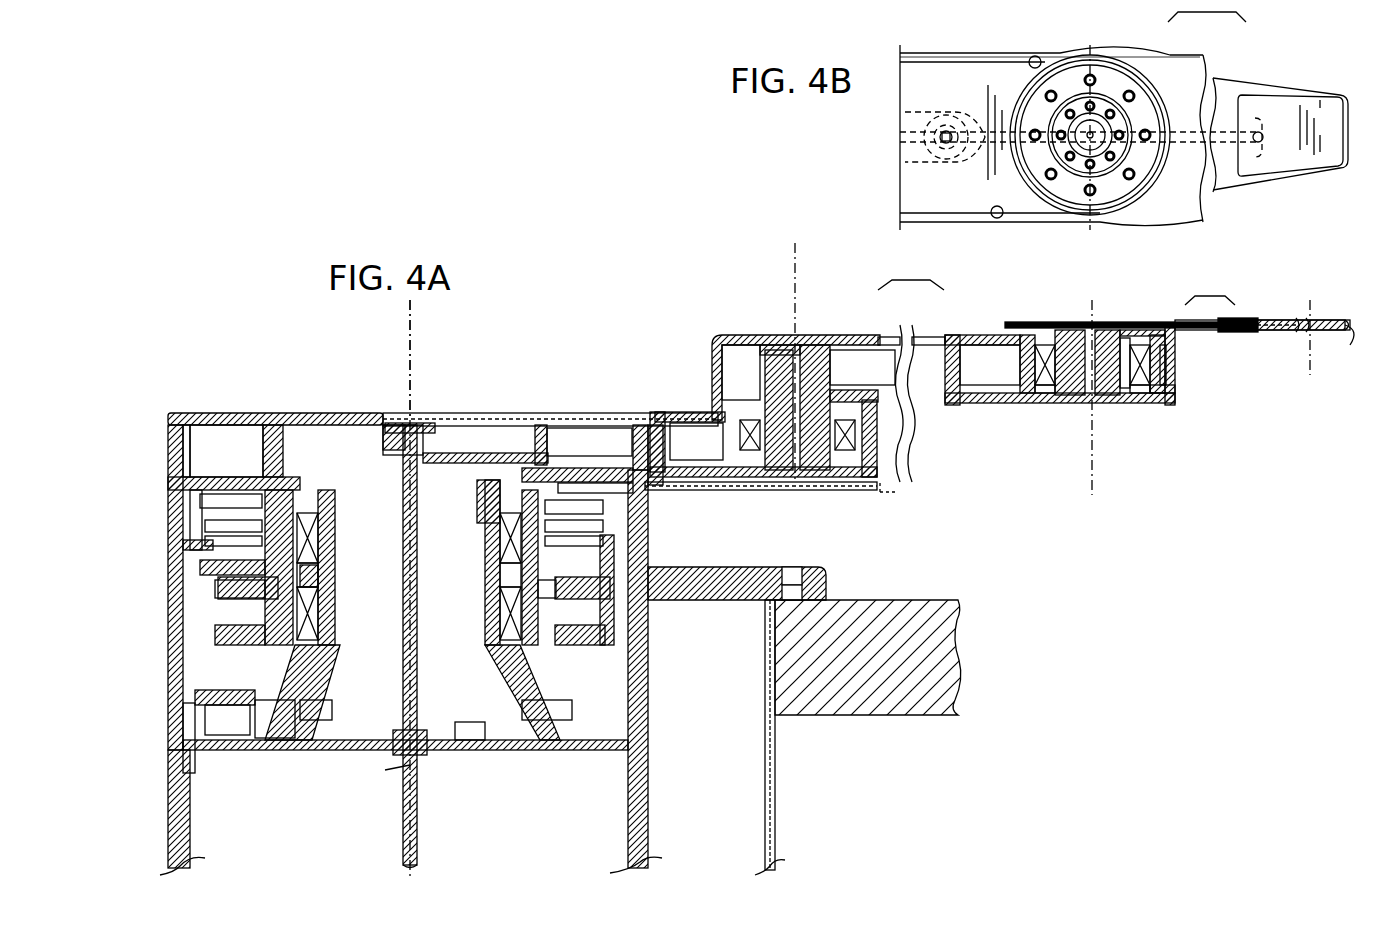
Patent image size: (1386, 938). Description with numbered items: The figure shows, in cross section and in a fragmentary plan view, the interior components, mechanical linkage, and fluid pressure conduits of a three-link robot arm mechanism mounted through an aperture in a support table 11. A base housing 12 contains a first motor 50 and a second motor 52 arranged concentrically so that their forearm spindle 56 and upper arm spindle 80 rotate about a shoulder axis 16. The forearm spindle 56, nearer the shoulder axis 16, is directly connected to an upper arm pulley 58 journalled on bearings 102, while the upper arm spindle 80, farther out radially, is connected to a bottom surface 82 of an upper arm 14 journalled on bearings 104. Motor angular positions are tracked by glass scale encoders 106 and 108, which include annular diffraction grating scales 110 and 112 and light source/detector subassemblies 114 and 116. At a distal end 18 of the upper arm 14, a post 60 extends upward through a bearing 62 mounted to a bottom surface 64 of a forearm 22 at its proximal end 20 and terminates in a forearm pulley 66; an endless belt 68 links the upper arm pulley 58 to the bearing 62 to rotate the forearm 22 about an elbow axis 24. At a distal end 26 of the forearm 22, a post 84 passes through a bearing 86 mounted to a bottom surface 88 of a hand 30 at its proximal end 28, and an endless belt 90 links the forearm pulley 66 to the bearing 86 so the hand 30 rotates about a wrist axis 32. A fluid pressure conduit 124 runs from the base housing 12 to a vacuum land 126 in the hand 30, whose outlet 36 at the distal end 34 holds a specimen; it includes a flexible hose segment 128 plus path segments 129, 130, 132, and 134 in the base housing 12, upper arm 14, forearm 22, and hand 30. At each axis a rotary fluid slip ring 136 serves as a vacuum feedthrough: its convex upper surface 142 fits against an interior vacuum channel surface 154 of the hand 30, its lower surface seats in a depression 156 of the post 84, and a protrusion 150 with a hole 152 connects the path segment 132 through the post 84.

In FIG. 4A, the support table 11 is at (900, 600).
In FIG. 4A, the base housing 12 is at (776, 775).
In FIG. 4A, the upper arm 14 is at (566, 418).
In FIG. 4A, the shoulder axis 16 is at (400, 343).
In FIG. 4A, the distal end of upper arm 18 is at (878, 445).
In FIG. 4A, the proximal end of forearm 20 is at (712, 362).
In FIG. 4A, the forearm 22 is at (800, 345).
In FIG. 4A, the elbow axis 24 is at (792, 258).
In FIG. 4A, the distal end of forearm 26 is at (1176, 378).
In FIG. 4A, the proximal end of hand 28 is at (1012, 325).
In FIG. 4A, the hand 30 is at (1174, 320).
In FIG. 4B, the hand 30 is at (975, 75).
In FIG. 4A, the wrist axis 32 is at (1097, 462).
In FIG. 4B, the wrist axis 32 is at (1093, 131).
In FIG. 4A, the distal end of hand 34 is at (1338, 342).
In FIG. 4B, the distal end of hand 34 is at (1345, 110).
In FIG. 4A, the fluid pressure outlet 36 is at (1255, 320).
In FIG. 4B, the fluid pressure outlet 36 is at (1262, 145).
In FIG. 4A, the first motor 50 is at (235, 638).
In FIG. 4A, the second motor 52 is at (255, 600).
In FIG. 4A, the forearm spindle 56 is at (310, 662).
In FIG. 4A, the upper arm pulley 58 is at (497, 430).
In FIG. 4A, the post 60 is at (810, 470).
In FIG. 4A, the bearing 62 is at (728, 438).
In FIG. 4A, the bottom surface of forearm 64 is at (990, 405).
In FIG. 4A, the forearm pulley 66 is at (832, 350).
In FIG. 4A, the endless belt 68 is at (597, 450).
In FIG. 4A, the upper arm spindle 80 is at (318, 560).
In FIG. 4A, the bottom surface of upper arm 82 is at (712, 490).
In FIG. 4A, the post 84 is at (1150, 400).
In FIG. 4B, the post 84 is at (1105, 165).
In FIG. 4A, the bearing 86 is at (1176, 352).
In FIG. 4B, the bearing 86 is at (1075, 82).
In FIG. 4A, the bottom surface of hand 88 is at (1275, 331).
In FIG. 4A, the endless belt 90 is at (872, 374).
In FIG. 4B, the endless belt 90 is at (940, 62).
In FIG. 4A, the bearings 102 is at (318, 600).
In FIG. 4A, the bearings 104 is at (318, 520).
In FIG. 4A, the glass scale encoder 106 is at (193, 732).
In FIG. 4A, the glass scale encoder 108 is at (204, 525).
In FIG. 4A, the annular diffraction grating scale 110 is at (285, 708).
In FIG. 4A, the annular diffraction grating scale 112 is at (210, 500).
In FIG. 4A, the light source/detector subassembly 114 is at (205, 720).
In FIG. 4A, the light source/detector subassembly 116 is at (175, 488).
In FIG. 4A, the fluid pressure conduit 124 is at (385, 782).
In FIG. 4A, the fluid pocket or land 126 is at (1325, 320).
In FIG. 4B, the fluid pocket or land 126 is at (1295, 165).
In FIG. 4A, the path segment 128 is at (420, 795).
In FIG. 4A, the path segment 129 is at (400, 690).
In FIG. 4A, the path segment 130 is at (640, 418).
In FIG. 4A, the path segment 132 is at (922, 340).
In FIG. 4A, the path segment 134 is at (1142, 330).
In FIG. 4B, the path segment 134 is at (978, 165).
In FIG. 4A, the rotary fluid slip ring 136 is at (435, 425).
In FIG. 4A, the convex upper surface 142 is at (1083, 335).
In FIG. 4A, the protrusion 150 is at (1093, 330).
In FIG. 4A, the hole 152 is at (1062, 395).
In FIG. 4A, the interior vacuum channel surface 154 is at (1106, 340).
In FIG. 4A, the depression 156 is at (1115, 395).